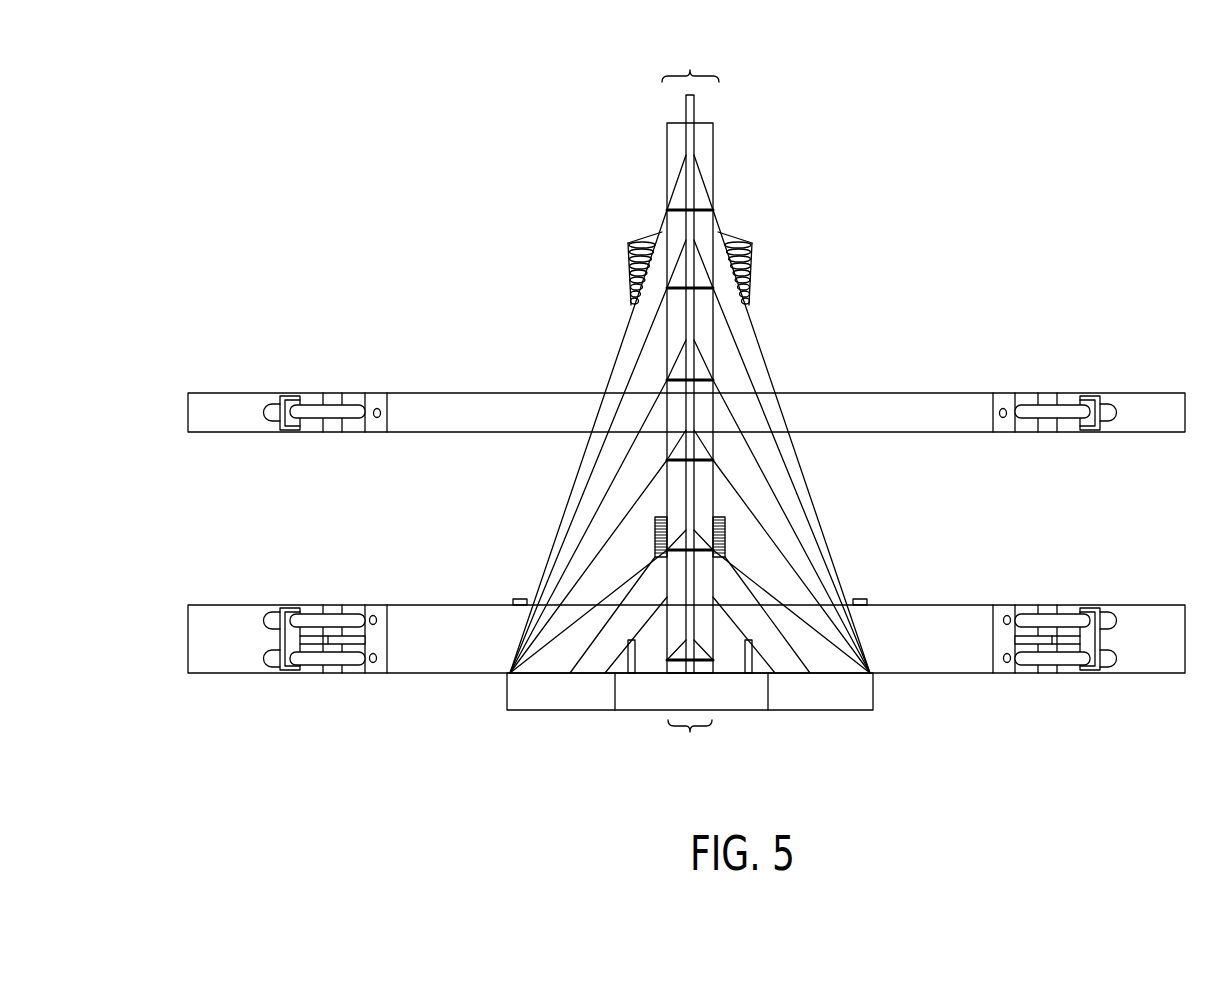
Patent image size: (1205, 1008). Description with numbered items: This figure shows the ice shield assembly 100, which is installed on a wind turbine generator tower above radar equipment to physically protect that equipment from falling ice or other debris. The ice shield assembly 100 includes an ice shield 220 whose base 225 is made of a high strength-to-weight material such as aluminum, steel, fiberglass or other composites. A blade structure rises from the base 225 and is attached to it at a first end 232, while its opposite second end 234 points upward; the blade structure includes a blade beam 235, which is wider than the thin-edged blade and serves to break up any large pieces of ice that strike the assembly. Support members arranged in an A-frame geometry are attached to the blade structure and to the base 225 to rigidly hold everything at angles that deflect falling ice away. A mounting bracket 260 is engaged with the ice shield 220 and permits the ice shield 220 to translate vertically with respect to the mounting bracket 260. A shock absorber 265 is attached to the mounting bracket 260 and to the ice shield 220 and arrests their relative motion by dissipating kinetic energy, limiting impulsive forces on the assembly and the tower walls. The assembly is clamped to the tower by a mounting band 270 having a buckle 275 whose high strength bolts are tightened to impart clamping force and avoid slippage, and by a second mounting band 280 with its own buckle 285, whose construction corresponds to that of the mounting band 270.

The ice shield assembly 100 is at (408, 192).
The ice shield 220 is at (603, 465).
The base 225 is at (562, 690).
The first end 232 is at (690, 746).
The second end 234 is at (690, 350).
The blade beam 235 is at (705, 160).
The mounting bracket 260 is at (648, 648).
The shock absorber 265 is at (748, 268).
The mounting band 270 is at (1150, 645).
The buckle 275 is at (1020, 640).
The second mounting band 280 is at (1154, 402).
The buckle 285 is at (1055, 395).